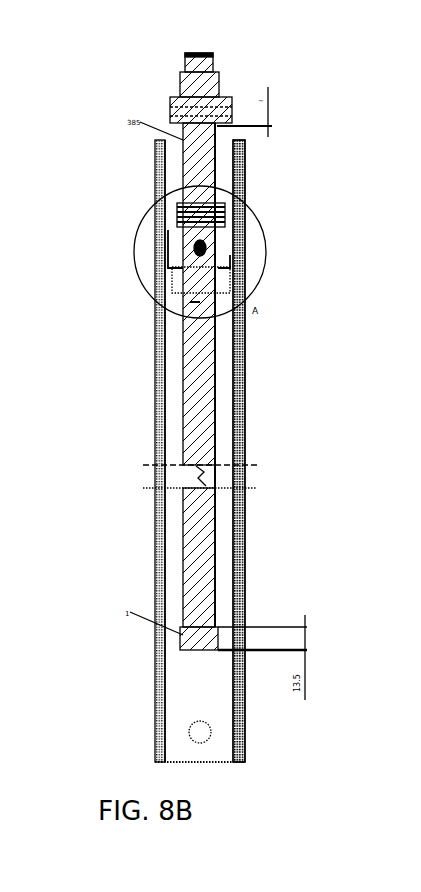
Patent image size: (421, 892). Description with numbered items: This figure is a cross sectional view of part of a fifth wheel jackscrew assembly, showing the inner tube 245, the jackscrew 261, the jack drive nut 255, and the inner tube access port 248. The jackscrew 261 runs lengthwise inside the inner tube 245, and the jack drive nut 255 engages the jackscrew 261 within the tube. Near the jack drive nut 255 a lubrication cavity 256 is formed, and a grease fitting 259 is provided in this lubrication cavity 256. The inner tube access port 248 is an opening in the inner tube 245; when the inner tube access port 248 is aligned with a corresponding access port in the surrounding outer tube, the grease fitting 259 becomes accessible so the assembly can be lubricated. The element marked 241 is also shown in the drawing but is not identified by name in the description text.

The tubular housing 241 is at (331, 762).
The inner tube 245 is at (240, 390).
The inner tube access port 248 is at (165, 238).
The jack drive nut 255 is at (243, 273).
The lubrication cavity 256 is at (170, 268).
The grease fitting 259 is at (225, 222).
The jackscrew 261 is at (203, 562).